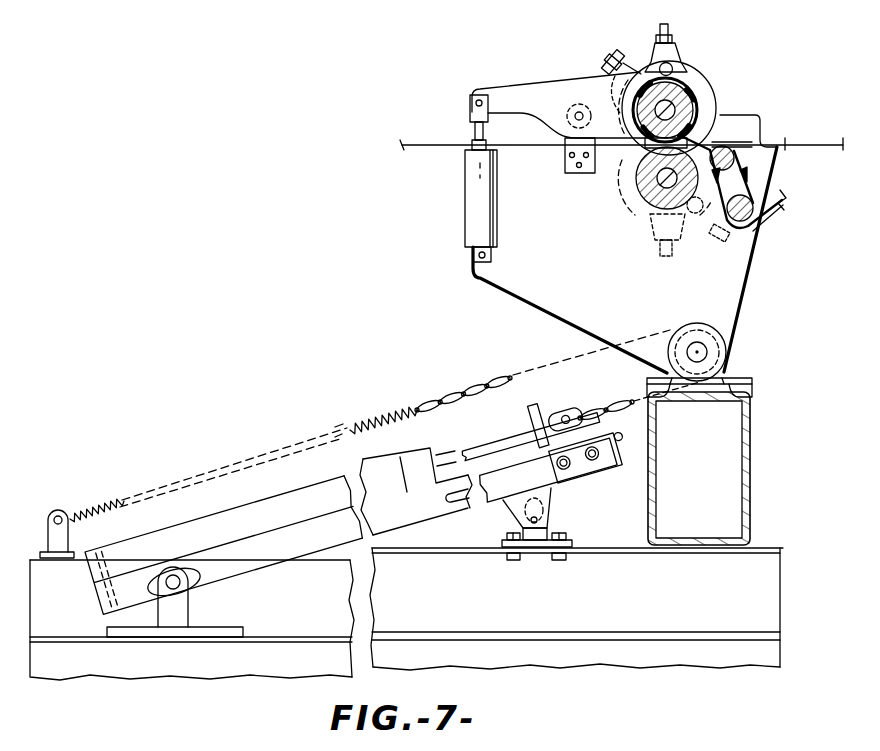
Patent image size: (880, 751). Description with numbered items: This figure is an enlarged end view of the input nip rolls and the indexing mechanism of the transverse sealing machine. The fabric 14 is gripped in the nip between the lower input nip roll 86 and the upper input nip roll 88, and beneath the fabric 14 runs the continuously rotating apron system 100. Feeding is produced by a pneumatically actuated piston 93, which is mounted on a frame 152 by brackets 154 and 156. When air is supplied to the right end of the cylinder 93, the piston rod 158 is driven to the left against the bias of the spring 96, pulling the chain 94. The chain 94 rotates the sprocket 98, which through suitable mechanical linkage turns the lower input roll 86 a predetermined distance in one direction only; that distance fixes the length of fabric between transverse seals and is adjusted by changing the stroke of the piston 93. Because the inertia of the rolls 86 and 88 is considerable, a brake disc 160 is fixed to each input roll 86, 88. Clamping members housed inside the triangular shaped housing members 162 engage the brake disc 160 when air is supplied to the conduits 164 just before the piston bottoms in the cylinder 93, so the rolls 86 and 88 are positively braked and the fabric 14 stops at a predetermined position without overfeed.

The fabric 14 is at (433, 145).
The lower input nip roll 86 is at (641, 208).
The upper input nip roll 88 is at (698, 108).
The pneumatically actuated piston 93 is at (387, 470).
The chain 94 is at (500, 374).
The spring 96 is at (383, 413).
The sprocket 98 is at (701, 326).
The apron system 100 is at (774, 212).
The frame 152 is at (580, 552).
The bracket 154 is at (212, 628).
The bracket 156 is at (549, 524).
The piston rod 158 is at (487, 445).
The brake disc 160 is at (706, 85).
The triangular shaped housing member 162 is at (637, 66).
The conduit 164 is at (669, 31).